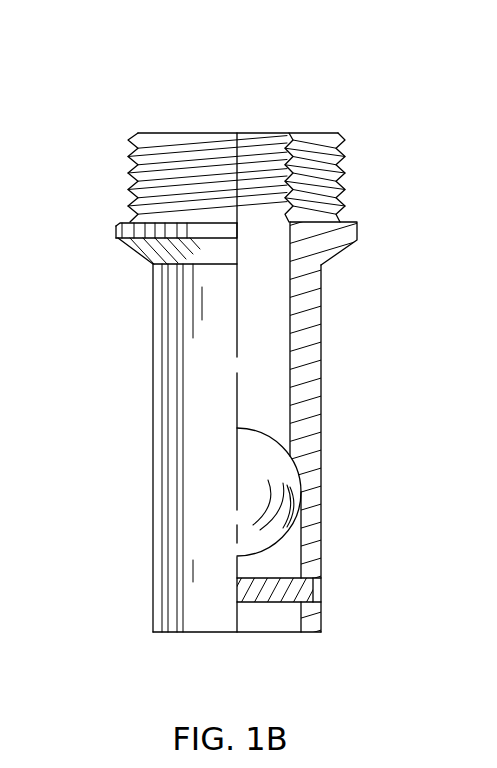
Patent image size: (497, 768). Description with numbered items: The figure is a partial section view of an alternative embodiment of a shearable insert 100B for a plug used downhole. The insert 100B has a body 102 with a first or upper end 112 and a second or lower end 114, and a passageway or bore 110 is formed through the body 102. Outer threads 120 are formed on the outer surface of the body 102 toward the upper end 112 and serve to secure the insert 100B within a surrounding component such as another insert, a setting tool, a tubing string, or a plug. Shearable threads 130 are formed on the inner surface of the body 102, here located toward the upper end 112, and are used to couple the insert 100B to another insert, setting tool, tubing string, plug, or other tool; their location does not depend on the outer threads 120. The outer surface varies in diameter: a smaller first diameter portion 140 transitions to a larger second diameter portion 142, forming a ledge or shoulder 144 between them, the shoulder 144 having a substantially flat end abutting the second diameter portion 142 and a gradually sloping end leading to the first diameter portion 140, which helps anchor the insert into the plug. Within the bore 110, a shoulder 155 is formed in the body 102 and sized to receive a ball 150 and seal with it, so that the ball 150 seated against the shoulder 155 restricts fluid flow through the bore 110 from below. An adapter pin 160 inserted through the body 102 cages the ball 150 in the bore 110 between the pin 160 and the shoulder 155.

The shearable insert 100B is at (190, 68).
The first diameter portion 140 is at (122, 137).
The shearable threads 130 is at (252, 132).
The upper end 112 is at (317, 132).
The threads 120 is at (343, 177).
The shoulder 144 is at (120, 222).
The second diameter portion 142 is at (108, 229).
The lower end 114 is at (170, 633).
The body 102 is at (306, 282).
The ball 150 is at (270, 457).
The shoulder 155 is at (302, 470).
The adapter pin 160 is at (315, 588).
The bore 110 is at (263, 612).